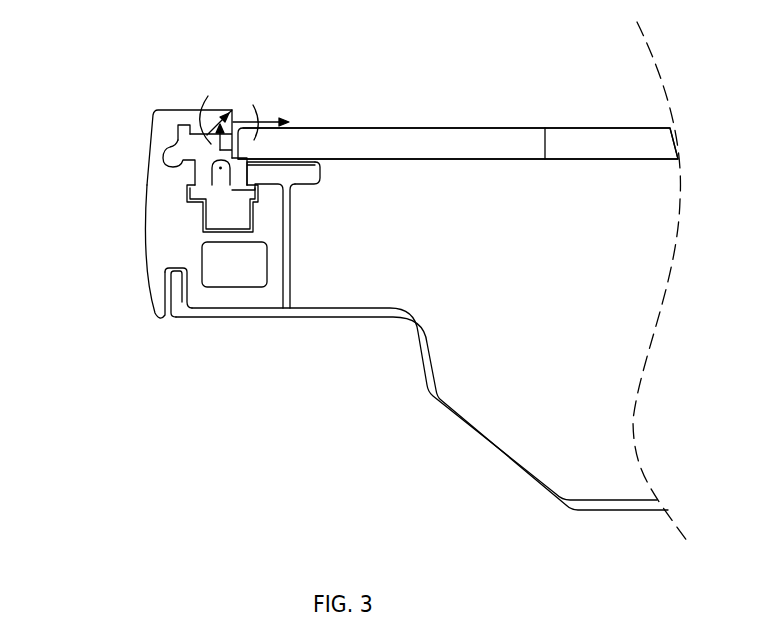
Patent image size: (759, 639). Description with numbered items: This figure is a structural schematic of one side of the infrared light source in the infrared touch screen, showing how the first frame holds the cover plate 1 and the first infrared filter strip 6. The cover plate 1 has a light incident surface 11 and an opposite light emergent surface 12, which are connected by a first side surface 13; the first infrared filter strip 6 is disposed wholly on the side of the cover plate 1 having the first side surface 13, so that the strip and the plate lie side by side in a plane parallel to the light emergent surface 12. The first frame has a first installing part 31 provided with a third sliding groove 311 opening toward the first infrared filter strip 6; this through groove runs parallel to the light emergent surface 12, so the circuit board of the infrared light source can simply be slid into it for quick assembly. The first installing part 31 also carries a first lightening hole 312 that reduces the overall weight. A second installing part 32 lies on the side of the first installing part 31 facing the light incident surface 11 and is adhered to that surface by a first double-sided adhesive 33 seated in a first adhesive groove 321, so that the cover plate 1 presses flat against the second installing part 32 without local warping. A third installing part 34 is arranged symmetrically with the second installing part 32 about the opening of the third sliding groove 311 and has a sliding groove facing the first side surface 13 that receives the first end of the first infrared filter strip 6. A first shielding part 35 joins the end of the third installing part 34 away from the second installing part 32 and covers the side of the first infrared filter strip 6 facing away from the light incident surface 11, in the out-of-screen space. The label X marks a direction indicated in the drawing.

The cover plate 1 is at (387, 140).
The light incident surface 11 is at (546, 128).
The light emergent surface 12 is at (470, 128).
The first side surface 13 is at (243, 153).
The direction X is at (223, 90).
The first infrared filter strip 6 is at (174, 138).
The first installing part 31 is at (190, 230).
The third sliding groove 311 is at (200, 218).
The first lightening hole 312 is at (218, 278).
The second installing part 32 is at (262, 166).
The first adhesive groove 321 is at (285, 166).
The first double-sided adhesive 33 is at (318, 166).
The third installing part 34 is at (163, 180).
The first shielding part 35 is at (193, 117).